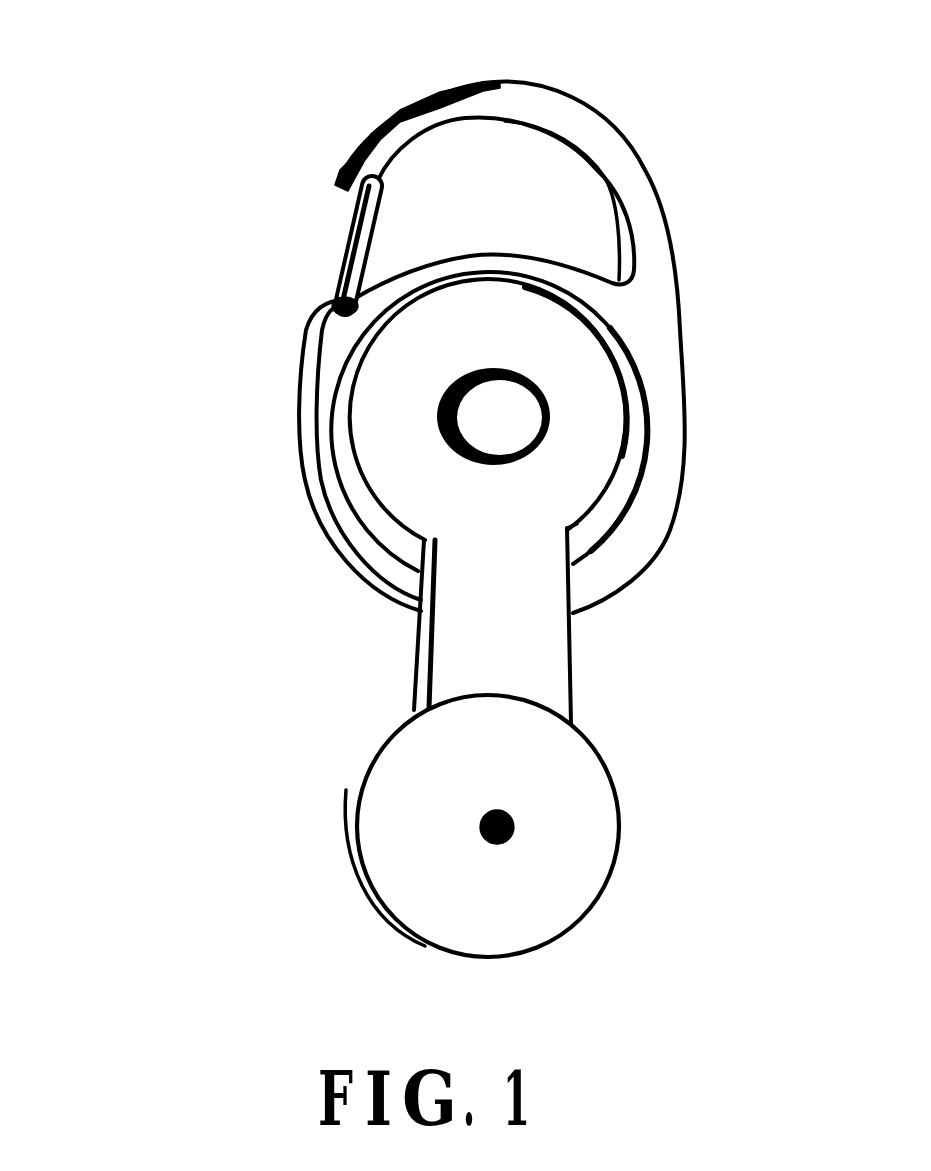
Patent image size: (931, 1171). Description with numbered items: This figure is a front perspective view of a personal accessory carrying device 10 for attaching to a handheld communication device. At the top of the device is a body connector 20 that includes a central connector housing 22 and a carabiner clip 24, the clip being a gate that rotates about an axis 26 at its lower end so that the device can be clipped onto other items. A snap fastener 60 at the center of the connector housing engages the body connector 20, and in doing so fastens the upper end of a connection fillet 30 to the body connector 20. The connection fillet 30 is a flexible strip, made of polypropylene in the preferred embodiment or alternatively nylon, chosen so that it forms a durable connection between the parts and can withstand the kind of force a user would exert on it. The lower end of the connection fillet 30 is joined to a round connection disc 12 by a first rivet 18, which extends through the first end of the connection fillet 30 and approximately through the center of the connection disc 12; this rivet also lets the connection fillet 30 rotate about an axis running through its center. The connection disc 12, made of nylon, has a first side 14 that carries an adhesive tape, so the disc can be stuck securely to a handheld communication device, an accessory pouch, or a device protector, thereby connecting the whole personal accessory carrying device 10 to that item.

The personal accessory carrying device 10 is at (438, 478).
The connection disc 12 is at (474, 826).
The first side 14 is at (387, 783).
The first rivet 18 is at (513, 827).
The body connector 20 is at (630, 187).
The central connector housing 22 is at (610, 510).
The carabiner clip 24 is at (345, 241).
The axis 26 is at (336, 297).
The connection fillet 30 is at (537, 663).
The snap fastener 60 is at (503, 420).